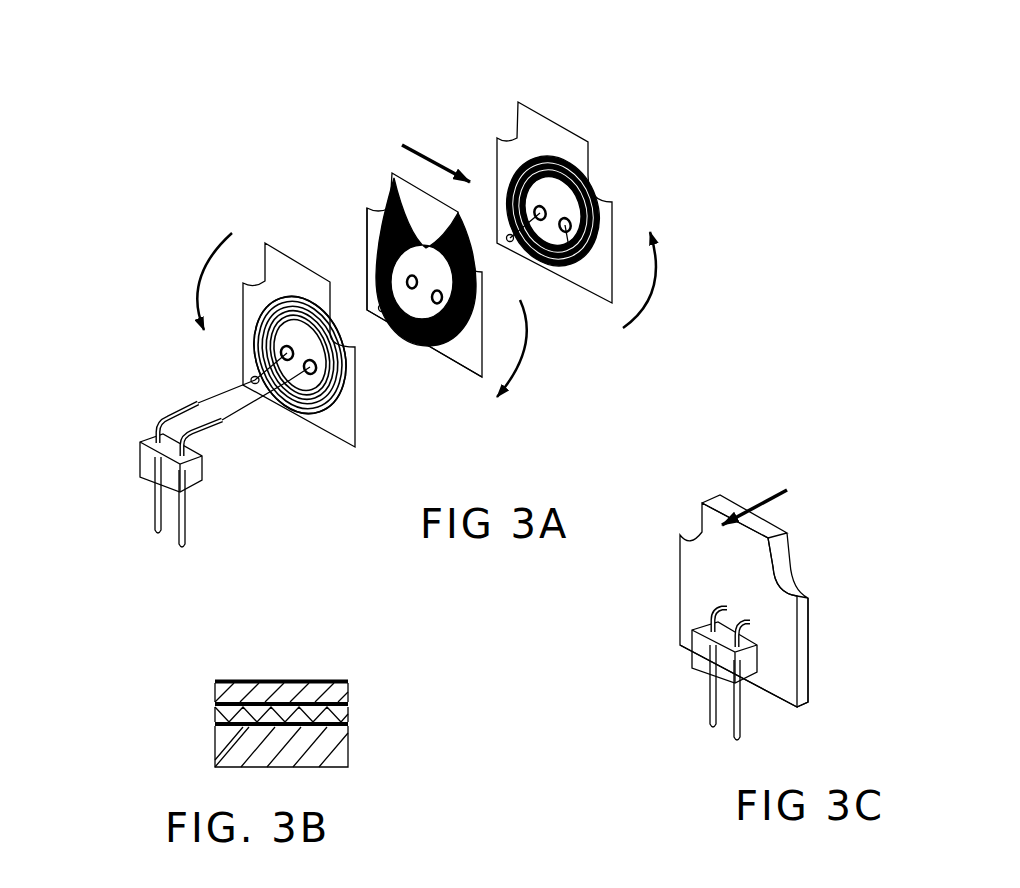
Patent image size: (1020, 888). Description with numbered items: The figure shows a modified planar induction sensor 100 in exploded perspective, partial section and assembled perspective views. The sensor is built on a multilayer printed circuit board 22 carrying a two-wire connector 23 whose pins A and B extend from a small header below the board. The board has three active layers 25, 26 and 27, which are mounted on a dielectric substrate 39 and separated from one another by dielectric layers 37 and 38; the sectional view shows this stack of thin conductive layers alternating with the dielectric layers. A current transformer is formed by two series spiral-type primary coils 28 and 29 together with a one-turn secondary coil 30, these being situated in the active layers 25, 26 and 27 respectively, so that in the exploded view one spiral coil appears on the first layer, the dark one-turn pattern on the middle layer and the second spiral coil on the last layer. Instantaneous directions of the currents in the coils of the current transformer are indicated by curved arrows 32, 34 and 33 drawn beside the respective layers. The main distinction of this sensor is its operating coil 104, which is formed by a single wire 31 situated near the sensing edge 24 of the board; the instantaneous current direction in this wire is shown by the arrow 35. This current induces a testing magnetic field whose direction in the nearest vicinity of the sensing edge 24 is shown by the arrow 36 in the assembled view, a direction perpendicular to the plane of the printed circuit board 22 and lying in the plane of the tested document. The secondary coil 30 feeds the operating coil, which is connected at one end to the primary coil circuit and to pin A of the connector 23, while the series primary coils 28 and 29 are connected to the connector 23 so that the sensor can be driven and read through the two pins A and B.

In FIG. 3C, the multilayer printed circuit board 22 is at (702, 588).
In FIG. 3C, the two-wire connector 23 is at (698, 658).
In FIG. 3C, the sensing edge 24 is at (772, 527).
In FIG. 3A, the active layer 25 is at (318, 428).
In FIG. 3B, the active layer 25 is at (215, 681).
In FIG. 3A, the active layer 26 is at (447, 370).
In FIG. 3B, the active layer 26 is at (215, 700).
In FIG. 3A, the active layer 27 is at (593, 297).
In FIG. 3B, the active layer 27 is at (215, 725).
In FIG. 3A, the spiral-type primary coil 28 is at (257, 302).
In FIG. 3A, the spiral-type primary coil 29 is at (527, 150).
In FIG. 3A, the one-turn secondary coil 30 is at (380, 230).
In FIG. 3A, the wire 31 is at (410, 175).
In FIG. 3A, the arrow 32 is at (197, 290).
In FIG. 3A, the arrow 33 is at (657, 300).
In FIG. 3A, the arrow 34 is at (523, 373).
In FIG. 3A, the arrow 35 is at (428, 155).
In FIG. 3C, the arrow 36 is at (763, 498).
In FIG. 3B, the dielectric layer 37 is at (350, 694).
In FIG. 3B, the dielectric layer 38 is at (350, 710).
In FIG. 3B, the dielectric substrate 39 is at (348, 742).
In FIG. 3C, the planar induction sensor 100 is at (832, 563).
In FIG. 3A, the operating coil 104 is at (378, 258).
In FIG. 3A, the pin A is at (150, 523).
In FIG. 3C, the pin A is at (707, 715).
In FIG. 3A, the pin B is at (187, 533).
In FIG. 3C, the pin B is at (742, 722).